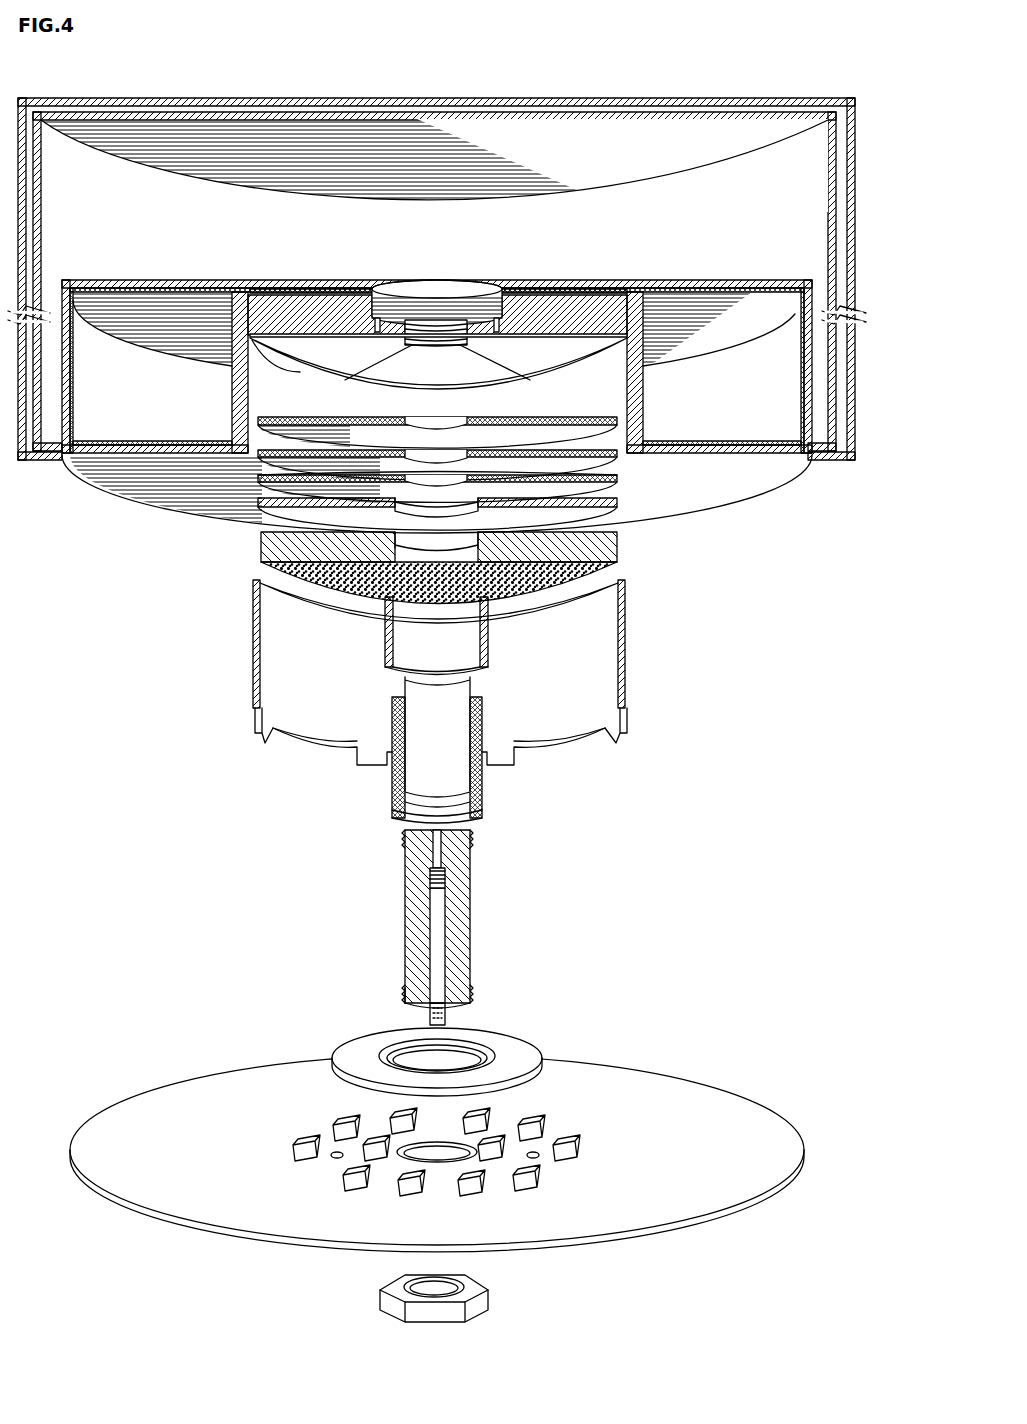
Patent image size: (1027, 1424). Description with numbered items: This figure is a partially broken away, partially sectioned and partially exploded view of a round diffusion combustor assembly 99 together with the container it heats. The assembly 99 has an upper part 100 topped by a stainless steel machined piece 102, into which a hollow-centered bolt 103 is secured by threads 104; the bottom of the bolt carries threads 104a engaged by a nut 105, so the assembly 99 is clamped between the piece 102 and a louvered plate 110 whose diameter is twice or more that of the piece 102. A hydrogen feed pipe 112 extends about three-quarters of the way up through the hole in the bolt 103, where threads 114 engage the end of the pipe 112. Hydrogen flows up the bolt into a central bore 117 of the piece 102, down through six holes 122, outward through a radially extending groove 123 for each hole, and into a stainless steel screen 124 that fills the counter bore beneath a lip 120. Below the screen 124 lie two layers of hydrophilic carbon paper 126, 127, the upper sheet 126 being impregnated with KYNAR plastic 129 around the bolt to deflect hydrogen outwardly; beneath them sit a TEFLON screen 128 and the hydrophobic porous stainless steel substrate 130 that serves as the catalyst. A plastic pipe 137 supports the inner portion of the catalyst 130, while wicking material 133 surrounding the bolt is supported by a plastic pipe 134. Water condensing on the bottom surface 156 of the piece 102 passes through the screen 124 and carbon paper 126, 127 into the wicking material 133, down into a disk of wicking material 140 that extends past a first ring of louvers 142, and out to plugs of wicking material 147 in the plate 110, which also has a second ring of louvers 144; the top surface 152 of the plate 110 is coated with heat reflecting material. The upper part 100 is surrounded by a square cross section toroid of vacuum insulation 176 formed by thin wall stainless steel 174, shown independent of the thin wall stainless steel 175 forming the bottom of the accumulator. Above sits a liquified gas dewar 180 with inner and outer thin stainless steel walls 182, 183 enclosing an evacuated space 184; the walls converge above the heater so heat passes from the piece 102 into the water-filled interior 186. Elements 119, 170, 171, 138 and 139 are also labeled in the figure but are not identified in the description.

The liquified gas dewar 180 is at (140, 98).
The inner thin stainless steel wall 182 is at (628, 97).
The outer thin stainless steel wall 183 is at (630, 121).
The space 184 is at (500, 112).
The interior 186 is at (434, 169).
The thin wall stainless steel 175 is at (268, 282).
The stainless steel machined piece 102 is at (558, 288).
The upper part 100 is at (578, 297).
The central bore 117 is at (377, 293).
The cap 119 is at (437, 282).
The threads 104 is at (437, 322).
The holes 122 is at (490, 332).
The thin wall stainless steel 174 is at (73, 375).
The vacuum insulation 176 is at (179, 415).
The bottom surface 156 is at (322, 365).
The radially extending groove 123 is at (488, 360).
The lip 120 is at (342, 378).
The stainless steel screen 124 is at (547, 418).
The partition wall 170 is at (630, 400).
The side chamber 171 is at (638, 405).
The KYNAR plastic 129 is at (478, 455).
The upper sheet of carbon paper 126 is at (610, 468).
The carbon paper 127 is at (612, 482).
The TEFLON screen 128 is at (612, 506).
The porous stainless steel substrate 130 is at (620, 548).
The assembly 99 is at (212, 545).
The cup 138 is at (459, 681).
The cup notch 139 is at (600, 743).
The plastic pipe 137 is at (488, 642).
The wicking material 133 is at (478, 682).
The plastic pipe 134 is at (482, 806).
The hollow-centered bolt 103 is at (470, 972).
The threads 114 is at (445, 872).
The threads 104a is at (404, 995).
The hydrogen feed pipe 112 is at (446, 1012).
The louvered plate 110 is at (655, 1098).
The top surface 152 is at (238, 1080).
The first ring of louvers 142 is at (382, 1145).
The second ring of louvers 144 is at (308, 1140).
The plugs of wicking material 147 is at (540, 1153).
The disk of wicking material 140 is at (520, 1048).
The nut 105 is at (470, 1282).